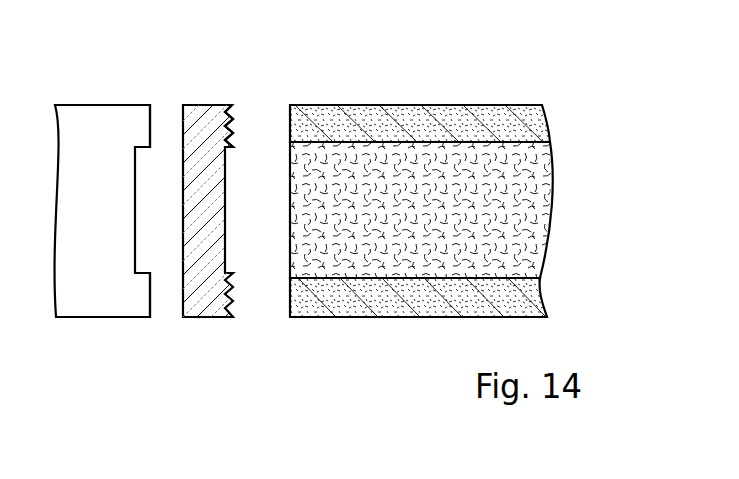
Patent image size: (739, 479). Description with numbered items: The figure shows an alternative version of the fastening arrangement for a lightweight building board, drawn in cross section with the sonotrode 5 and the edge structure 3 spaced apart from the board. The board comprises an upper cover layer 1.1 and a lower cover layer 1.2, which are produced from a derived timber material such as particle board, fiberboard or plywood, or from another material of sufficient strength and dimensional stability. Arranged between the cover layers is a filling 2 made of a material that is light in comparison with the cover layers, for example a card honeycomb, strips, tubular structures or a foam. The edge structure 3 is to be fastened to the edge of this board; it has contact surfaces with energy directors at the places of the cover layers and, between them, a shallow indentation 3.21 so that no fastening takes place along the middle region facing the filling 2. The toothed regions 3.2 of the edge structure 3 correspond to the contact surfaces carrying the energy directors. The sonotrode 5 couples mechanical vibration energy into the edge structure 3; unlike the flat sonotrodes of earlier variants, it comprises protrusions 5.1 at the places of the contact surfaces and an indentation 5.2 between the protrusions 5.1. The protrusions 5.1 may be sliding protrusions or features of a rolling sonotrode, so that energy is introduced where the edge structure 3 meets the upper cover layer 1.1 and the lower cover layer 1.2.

The upper cover layer 1.1 is at (530, 118).
The lower cover layer 1.2 is at (530, 287).
The filling 2 is at (523, 195).
The edge structure 3 is at (202, 132).
The toothing 3.2 is at (230, 108).
The shallow indentation 3.21 is at (203, 205).
The sonotrode 5 is at (82, 143).
The protrusions 5.1 is at (138, 127).
The indentation 5.2 is at (140, 200).